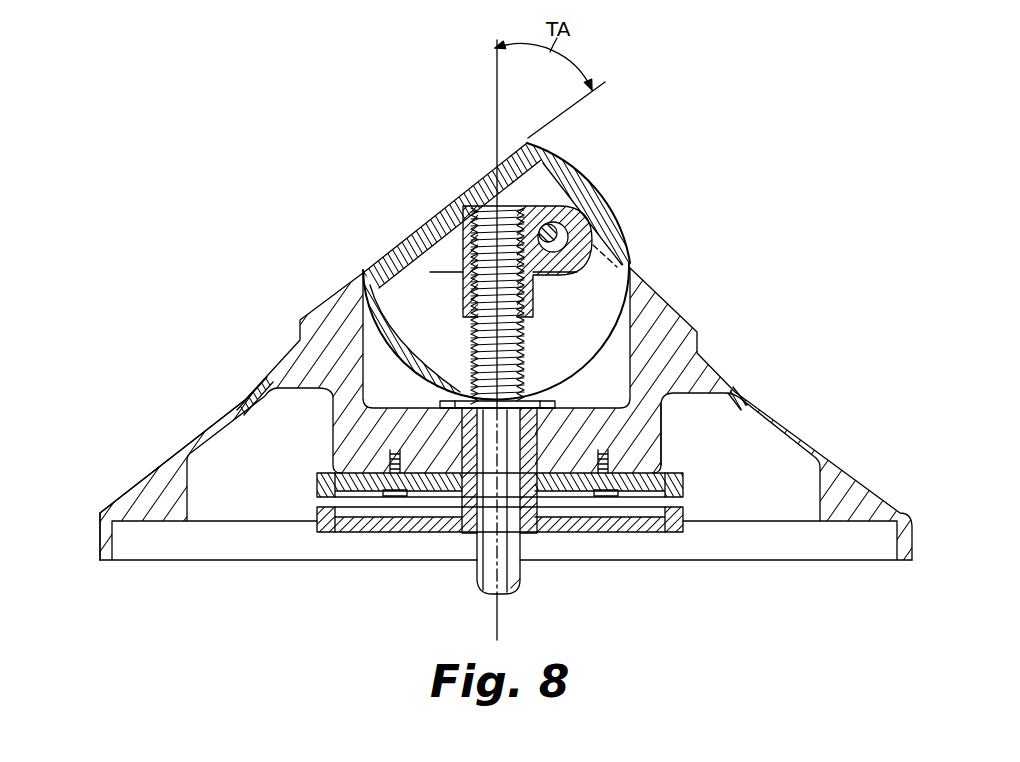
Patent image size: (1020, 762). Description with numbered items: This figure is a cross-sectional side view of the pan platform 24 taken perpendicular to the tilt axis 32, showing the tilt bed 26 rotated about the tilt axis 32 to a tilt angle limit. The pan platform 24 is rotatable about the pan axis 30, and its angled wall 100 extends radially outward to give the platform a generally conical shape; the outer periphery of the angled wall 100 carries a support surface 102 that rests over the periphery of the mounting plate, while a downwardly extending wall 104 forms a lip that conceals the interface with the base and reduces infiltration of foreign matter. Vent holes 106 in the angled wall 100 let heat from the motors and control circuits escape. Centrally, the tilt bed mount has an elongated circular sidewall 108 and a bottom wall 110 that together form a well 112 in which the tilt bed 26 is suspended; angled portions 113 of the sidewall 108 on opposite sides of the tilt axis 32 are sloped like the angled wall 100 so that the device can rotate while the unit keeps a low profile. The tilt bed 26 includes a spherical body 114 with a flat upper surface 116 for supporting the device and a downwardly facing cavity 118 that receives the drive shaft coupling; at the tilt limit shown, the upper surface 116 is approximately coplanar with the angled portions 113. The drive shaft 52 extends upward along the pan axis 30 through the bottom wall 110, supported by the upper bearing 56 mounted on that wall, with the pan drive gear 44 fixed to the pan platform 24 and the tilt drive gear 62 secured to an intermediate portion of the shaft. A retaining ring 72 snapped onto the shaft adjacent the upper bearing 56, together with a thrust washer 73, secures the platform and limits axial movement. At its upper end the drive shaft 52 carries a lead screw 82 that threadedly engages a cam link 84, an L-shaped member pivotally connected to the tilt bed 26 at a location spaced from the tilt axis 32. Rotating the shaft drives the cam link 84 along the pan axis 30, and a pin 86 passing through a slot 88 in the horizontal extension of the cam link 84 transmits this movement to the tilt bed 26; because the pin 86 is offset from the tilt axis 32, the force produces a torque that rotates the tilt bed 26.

The pan platform 24 is at (777, 416).
The tilt bed 26 is at (614, 200).
The pan axis 30 is at (492, 84).
The tilt axis 32 is at (463, 296).
The pan drive gear 44 is at (685, 488).
The drive shaft 52 is at (522, 575).
The upper bearing 56 is at (540, 447).
The tilt drive gear 62 is at (685, 521).
The retaining ring 72 is at (540, 395).
The thrust washer 73 is at (553, 407).
The lead screw 82 is at (472, 344).
The cam link 84 is at (540, 293).
The pin 86 is at (567, 183).
The slot 88 is at (593, 216).
The angled wall 100 is at (190, 437).
The support surface 102 is at (147, 527).
The downwardly extending wall 104 is at (98, 535).
The vent holes 106 is at (257, 392).
The sidewall 108 is at (368, 340).
The bottom wall 110 is at (372, 386).
The well 112 is at (617, 357).
The angled portions 113 is at (648, 312).
The spherical body 114 is at (598, 190).
The flat upper surface 116 is at (463, 193).
The cavity 118 is at (622, 337).